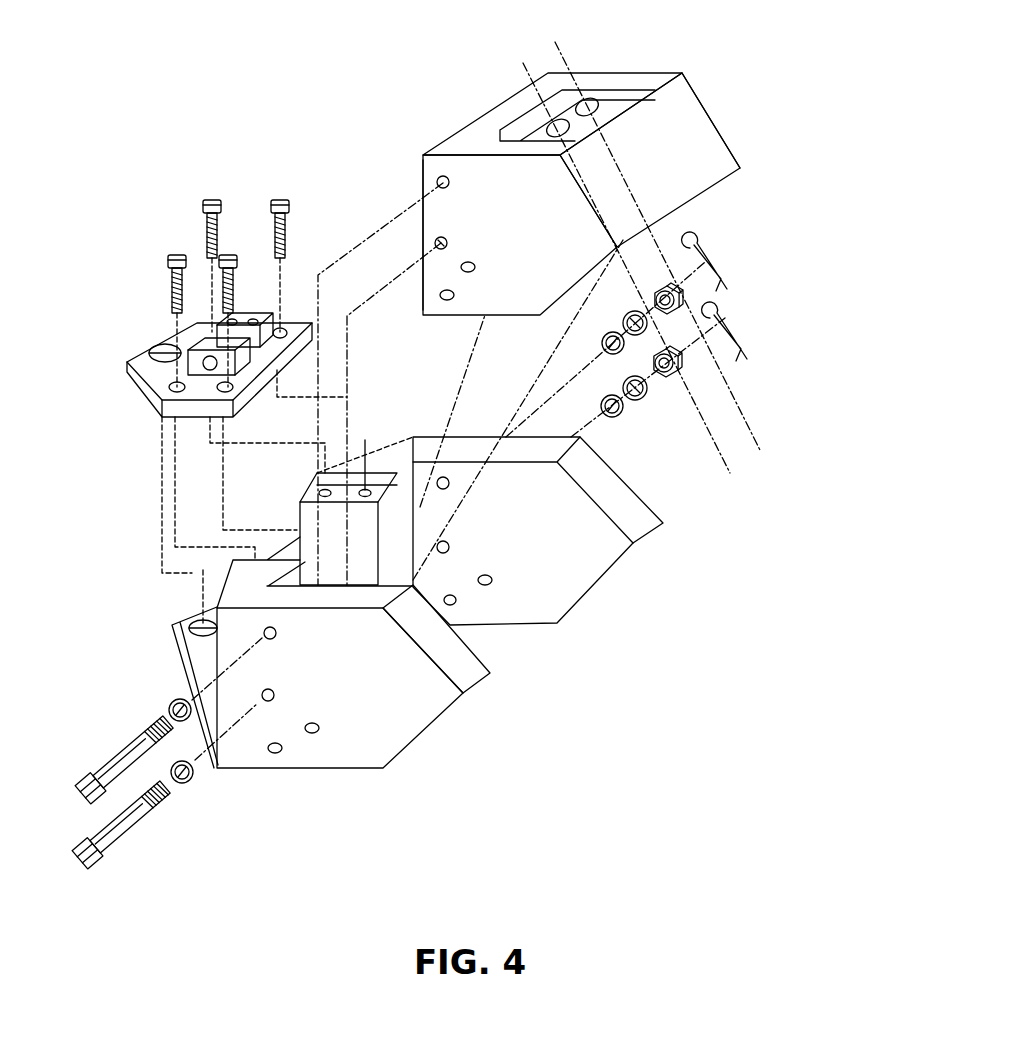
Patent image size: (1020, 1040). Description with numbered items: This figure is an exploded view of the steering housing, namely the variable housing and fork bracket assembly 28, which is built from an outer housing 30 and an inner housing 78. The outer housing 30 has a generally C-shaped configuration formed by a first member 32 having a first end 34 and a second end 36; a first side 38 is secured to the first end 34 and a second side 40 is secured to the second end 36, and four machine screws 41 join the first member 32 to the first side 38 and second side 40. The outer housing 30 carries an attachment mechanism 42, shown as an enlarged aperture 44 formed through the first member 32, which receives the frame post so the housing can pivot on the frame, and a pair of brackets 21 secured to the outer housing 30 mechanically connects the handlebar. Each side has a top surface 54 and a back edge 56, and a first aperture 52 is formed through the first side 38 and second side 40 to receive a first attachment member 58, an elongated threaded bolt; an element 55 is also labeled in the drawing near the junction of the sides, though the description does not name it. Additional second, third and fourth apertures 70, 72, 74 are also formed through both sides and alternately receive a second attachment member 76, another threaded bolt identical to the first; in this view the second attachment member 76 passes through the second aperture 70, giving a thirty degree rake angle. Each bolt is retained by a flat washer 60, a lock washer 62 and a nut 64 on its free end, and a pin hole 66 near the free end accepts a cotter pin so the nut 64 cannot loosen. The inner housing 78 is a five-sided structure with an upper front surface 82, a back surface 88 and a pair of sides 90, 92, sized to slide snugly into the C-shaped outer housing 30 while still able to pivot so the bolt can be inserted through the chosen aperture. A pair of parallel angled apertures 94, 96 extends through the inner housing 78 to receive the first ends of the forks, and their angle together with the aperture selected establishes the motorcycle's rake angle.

The brackets 21 is at (192, 340).
The variable housing and fork bracket assembly 28 is at (790, 42).
The outer housing 30 is at (402, 426).
The first member 32 is at (153, 378).
The first end 34 is at (188, 418).
The second end 36 is at (316, 322).
The first side 38 is at (377, 760).
The second side 40 is at (470, 437).
The machine screws 41 is at (172, 253).
The attachment mechanism 42 is at (128, 356).
The enlarged aperture 44 is at (158, 349).
The first aperture 52 is at (437, 181).
The top surface 54 is at (190, 666).
The bracket 55 is at (230, 592).
The back edge 56 is at (421, 231).
The first attachment member 58 is at (108, 760).
The flat washer 60 is at (601, 342).
The lock washer 62 is at (450, 487).
The nut 64 is at (660, 286).
The pin hole 66 is at (150, 728).
The second aperture 70 is at (435, 243).
The third aperture 72 is at (476, 267).
The fourth aperture 74 is at (441, 297).
The second attachment member 76 is at (115, 847).
The inner housing 78 is at (628, 73).
The upper front surface 82 is at (650, 160).
The back surface 88 is at (702, 240).
The side 90 is at (520, 235).
The side 92 is at (700, 86).
The angled aperture 94 is at (544, 128).
The angled aperture 96 is at (585, 100).